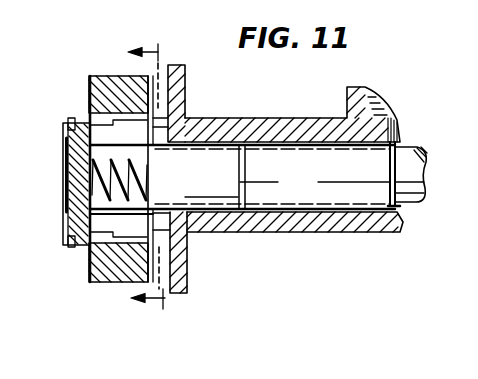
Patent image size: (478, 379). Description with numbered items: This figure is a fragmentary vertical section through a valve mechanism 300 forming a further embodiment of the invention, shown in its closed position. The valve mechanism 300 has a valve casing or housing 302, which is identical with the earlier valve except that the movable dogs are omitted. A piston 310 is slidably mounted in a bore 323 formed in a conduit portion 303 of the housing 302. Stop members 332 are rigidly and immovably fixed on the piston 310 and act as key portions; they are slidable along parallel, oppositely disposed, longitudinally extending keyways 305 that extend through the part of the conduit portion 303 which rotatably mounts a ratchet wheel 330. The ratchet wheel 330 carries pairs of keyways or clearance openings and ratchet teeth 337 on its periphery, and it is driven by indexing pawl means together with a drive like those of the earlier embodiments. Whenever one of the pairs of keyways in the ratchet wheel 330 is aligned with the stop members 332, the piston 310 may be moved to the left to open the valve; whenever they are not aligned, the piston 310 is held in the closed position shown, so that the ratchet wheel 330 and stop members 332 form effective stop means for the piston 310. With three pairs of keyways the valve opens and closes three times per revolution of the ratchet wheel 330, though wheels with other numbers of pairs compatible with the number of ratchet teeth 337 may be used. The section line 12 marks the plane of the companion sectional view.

The section line 12- 12 is at (141, 181).
The valve mechanism 300 is at (284, 262).
The valve casing or housing 302 is at (313, 100).
The conduit portion 303 is at (378, 228).
The keyways 305 is at (105, 137).
The piston 310 is at (312, 186).
The bore 323 is at (322, 275).
The ratchet wheel 330 is at (99, 82).
The stop members 332 is at (164, 118).
The ratchet teeth 337 is at (110, 282).